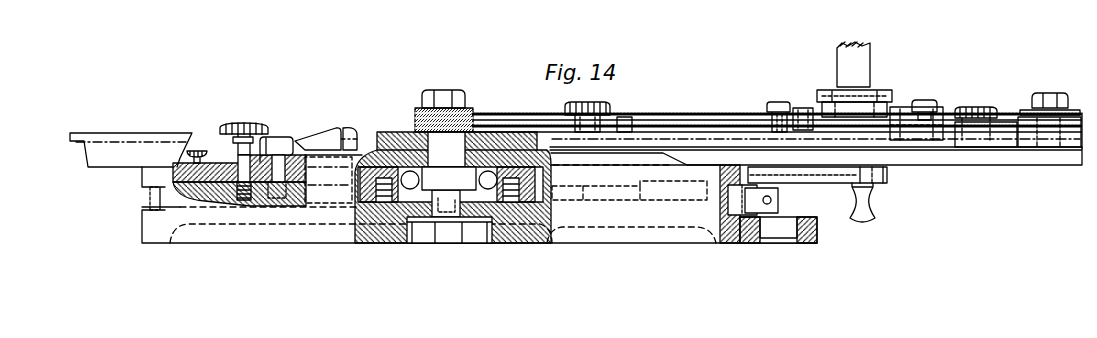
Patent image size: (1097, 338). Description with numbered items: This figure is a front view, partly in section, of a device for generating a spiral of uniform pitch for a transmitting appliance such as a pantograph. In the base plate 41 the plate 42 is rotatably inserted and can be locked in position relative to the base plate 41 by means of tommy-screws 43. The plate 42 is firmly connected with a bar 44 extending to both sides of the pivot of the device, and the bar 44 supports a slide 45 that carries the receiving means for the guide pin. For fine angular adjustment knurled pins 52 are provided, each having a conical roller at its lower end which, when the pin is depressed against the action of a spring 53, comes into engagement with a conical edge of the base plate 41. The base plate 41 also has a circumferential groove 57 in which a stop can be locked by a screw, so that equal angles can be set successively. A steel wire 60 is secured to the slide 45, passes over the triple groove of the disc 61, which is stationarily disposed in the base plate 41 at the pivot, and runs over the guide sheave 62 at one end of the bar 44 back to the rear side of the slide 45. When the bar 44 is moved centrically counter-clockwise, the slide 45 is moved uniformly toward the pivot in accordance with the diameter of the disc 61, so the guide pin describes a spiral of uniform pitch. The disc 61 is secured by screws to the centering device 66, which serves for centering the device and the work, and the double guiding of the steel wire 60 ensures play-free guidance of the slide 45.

The base plate 41 is at (537, 236).
The plate 42 is at (295, 157).
The tommy-screws 43 is at (343, 129).
The bar 44 is at (985, 163).
The slide 45 is at (898, 143).
The knurled pins 52 is at (248, 143).
The spring 53 is at (218, 162).
The circumferential groove 57 is at (163, 197).
The steel wire 60 is at (654, 122).
The disc 61 is at (473, 117).
The guide sheave 62 is at (1021, 112).
The centering device 66 is at (437, 177).